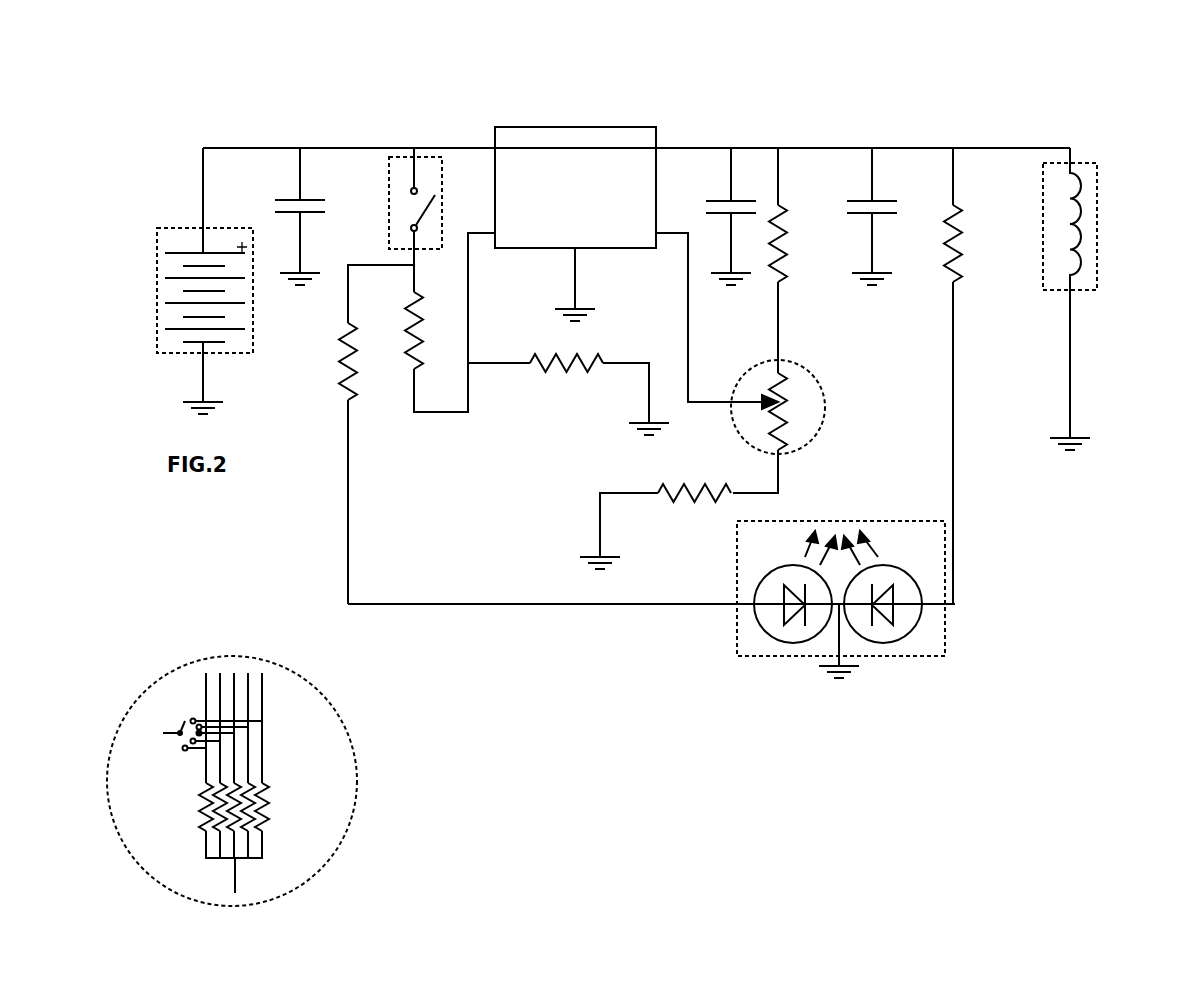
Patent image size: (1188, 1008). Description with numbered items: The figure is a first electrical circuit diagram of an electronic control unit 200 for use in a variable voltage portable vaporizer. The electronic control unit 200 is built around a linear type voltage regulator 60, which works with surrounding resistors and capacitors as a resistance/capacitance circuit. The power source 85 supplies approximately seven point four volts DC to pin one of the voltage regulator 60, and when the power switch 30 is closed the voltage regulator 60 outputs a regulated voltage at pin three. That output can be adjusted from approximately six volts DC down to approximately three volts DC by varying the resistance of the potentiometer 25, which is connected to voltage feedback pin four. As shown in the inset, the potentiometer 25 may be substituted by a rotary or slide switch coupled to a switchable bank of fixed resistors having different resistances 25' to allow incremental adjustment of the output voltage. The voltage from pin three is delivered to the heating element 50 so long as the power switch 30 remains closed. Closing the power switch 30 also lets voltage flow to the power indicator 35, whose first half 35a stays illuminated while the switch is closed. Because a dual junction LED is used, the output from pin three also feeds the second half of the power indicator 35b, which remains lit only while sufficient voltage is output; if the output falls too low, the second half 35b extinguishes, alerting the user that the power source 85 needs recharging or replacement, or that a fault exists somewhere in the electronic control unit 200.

The electronic control unit 200 is at (87, 98).
The power source 85 is at (237, 353).
The power switch 30 is at (426, 157).
The linear voltage regulator U1 60 is at (628, 247).
The potentiometer 25 is at (804, 414).
The heating element 50 is at (1088, 291).
The power indicator 35 is at (937, 653).
The first half of power indicator 35a is at (800, 643).
The second half of power indicator 35b is at (868, 643).
The switchable bank of fixed resistors 25' is at (254, 781).